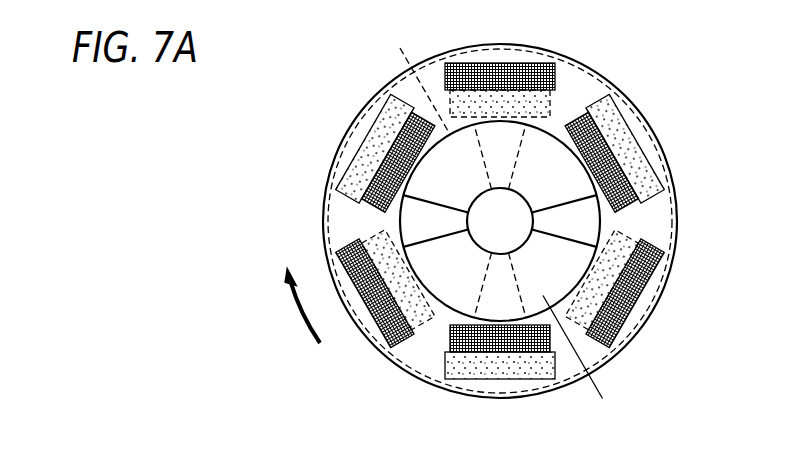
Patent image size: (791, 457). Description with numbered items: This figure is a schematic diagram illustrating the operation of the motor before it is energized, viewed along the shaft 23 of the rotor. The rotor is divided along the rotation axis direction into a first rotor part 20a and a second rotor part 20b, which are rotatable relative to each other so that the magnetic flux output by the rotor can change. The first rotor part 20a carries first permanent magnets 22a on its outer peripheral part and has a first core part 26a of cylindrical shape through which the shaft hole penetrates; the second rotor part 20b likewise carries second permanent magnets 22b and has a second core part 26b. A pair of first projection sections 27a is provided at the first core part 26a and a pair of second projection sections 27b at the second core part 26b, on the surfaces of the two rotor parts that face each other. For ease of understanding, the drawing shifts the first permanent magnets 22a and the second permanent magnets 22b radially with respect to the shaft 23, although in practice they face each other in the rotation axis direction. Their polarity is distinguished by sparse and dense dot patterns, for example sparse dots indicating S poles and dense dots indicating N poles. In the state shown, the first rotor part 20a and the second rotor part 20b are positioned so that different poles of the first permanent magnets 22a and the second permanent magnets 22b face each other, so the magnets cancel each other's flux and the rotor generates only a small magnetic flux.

The first rotor part 20a is at (662, 223).
The second rotor part 20b is at (580, 83).
The first permanent magnets 22a is at (628, 123).
The second permanent magnets 22b is at (512, 75).
The shaft 23 is at (490, 210).
The first core part 26a is at (415, 80).
The second core part 26b is at (590, 364).
The first projection sections 27a is at (502, 163).
The second projection sections 27b is at (412, 222).